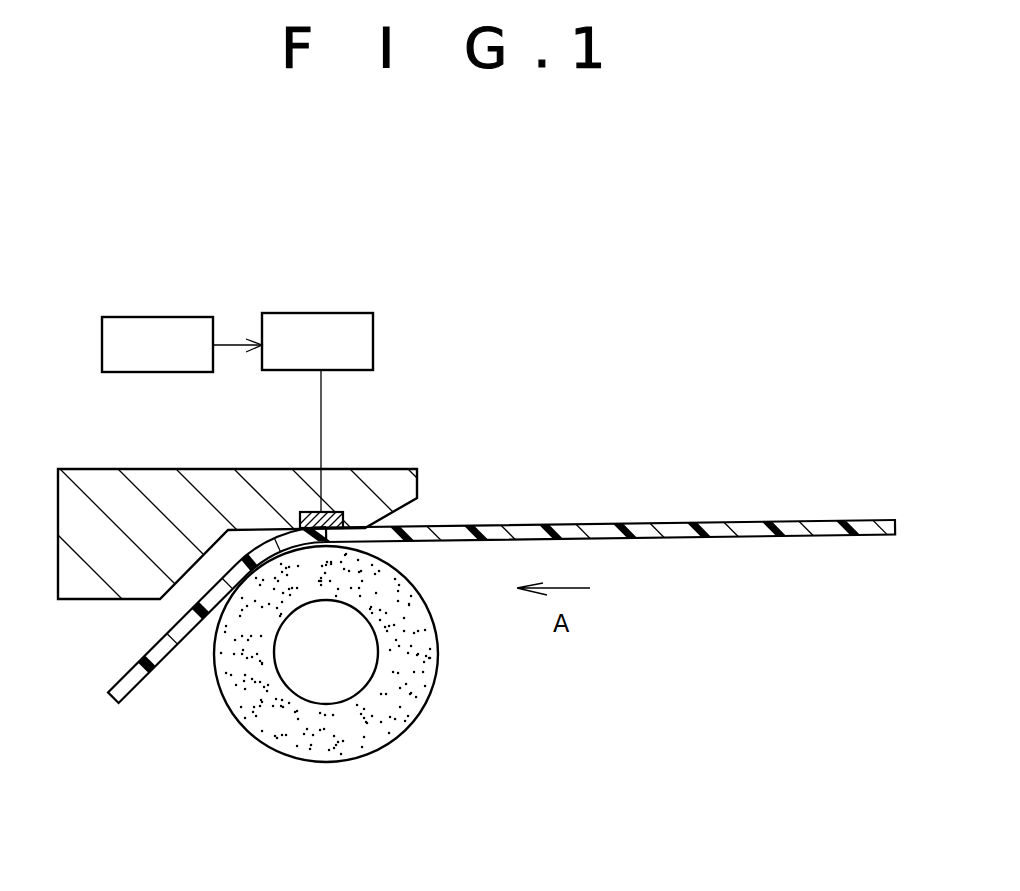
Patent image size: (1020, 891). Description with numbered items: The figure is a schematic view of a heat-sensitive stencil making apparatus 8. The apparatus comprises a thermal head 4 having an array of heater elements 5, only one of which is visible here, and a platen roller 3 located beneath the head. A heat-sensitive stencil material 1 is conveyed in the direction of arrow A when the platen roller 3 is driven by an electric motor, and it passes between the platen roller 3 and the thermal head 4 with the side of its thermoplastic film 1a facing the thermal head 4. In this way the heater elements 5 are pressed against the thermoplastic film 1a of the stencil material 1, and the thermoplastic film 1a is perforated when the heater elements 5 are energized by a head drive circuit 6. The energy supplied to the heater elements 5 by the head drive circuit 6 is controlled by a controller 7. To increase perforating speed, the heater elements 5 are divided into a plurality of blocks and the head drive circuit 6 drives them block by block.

The heat-sensitive stencil material 1 is at (507, 525).
The thermoplastic film 1a is at (158, 637).
The platen roller 3 is at (357, 745).
The thermal head 4 is at (145, 469).
The heater elements 5 is at (343, 511).
The head drive circuit 6 is at (347, 313).
The controller 7 is at (180, 317).
The stencil making apparatus 8 is at (663, 258).